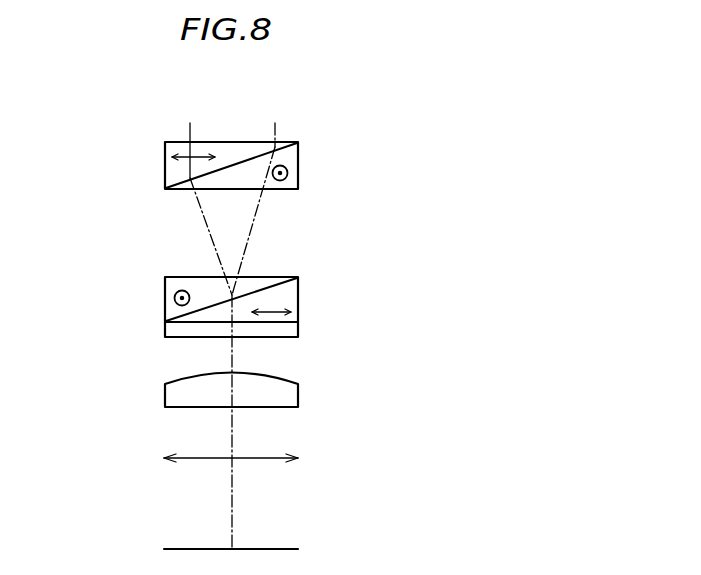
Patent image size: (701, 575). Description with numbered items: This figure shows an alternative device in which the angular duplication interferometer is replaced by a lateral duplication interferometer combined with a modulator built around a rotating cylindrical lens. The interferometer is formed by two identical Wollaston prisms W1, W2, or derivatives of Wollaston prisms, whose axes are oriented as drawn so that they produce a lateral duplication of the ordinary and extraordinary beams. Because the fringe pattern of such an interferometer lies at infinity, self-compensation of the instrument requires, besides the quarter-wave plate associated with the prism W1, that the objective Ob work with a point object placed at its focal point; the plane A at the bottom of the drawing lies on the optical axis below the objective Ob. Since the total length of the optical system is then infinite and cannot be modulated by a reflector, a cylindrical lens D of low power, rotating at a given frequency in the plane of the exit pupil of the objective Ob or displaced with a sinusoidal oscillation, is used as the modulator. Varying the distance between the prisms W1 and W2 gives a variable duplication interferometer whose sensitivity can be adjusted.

The Wollaston prism W2 is at (255, 165).
The Wollaston prism W1 is at (256, 309).
The cylindrical lens D is at (247, 390).
The objective Ob is at (252, 460).
The object plane / specimen A is at (243, 550).